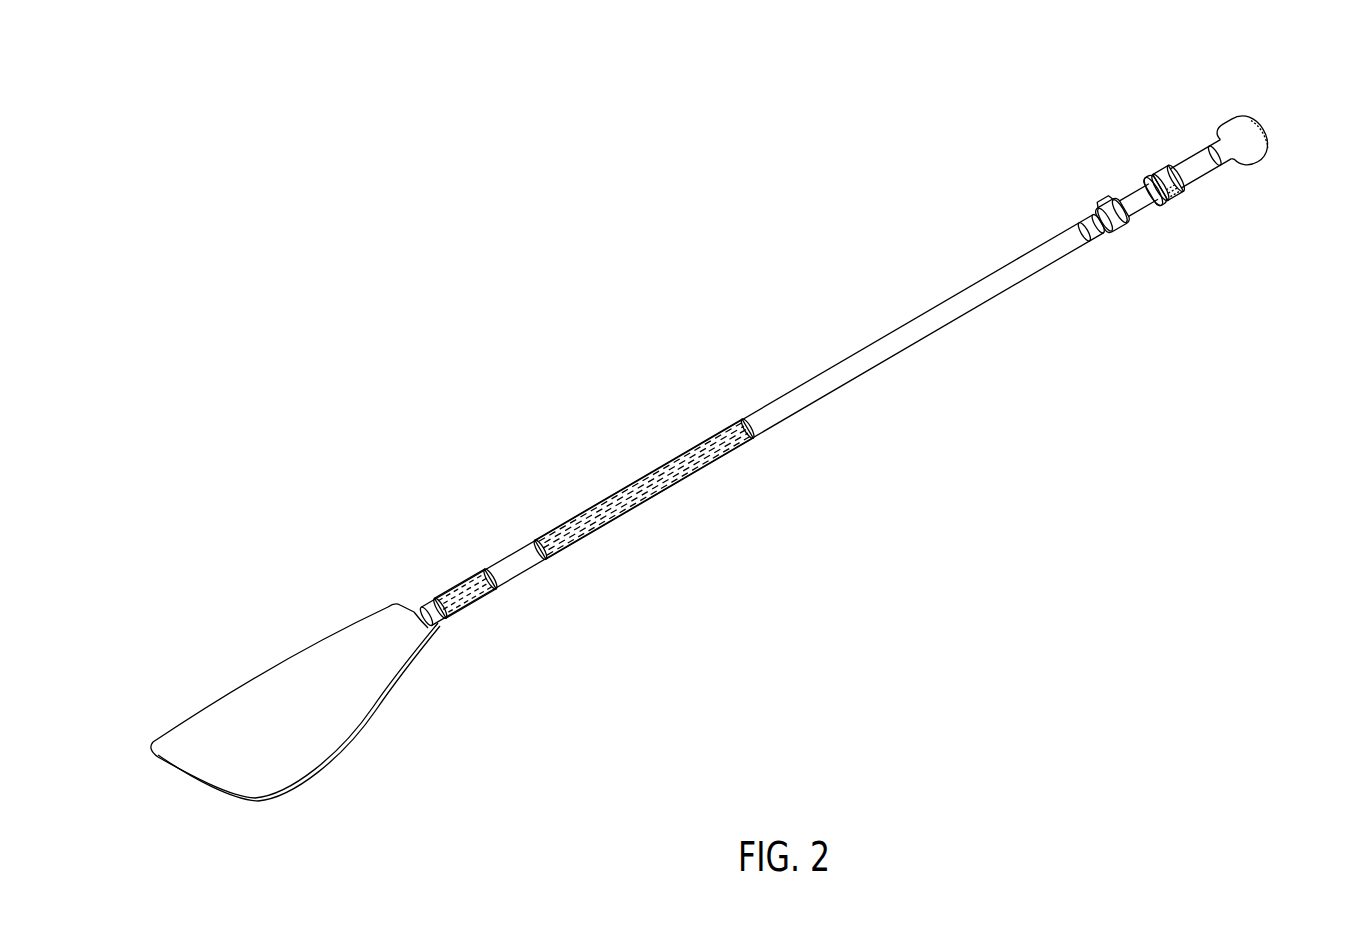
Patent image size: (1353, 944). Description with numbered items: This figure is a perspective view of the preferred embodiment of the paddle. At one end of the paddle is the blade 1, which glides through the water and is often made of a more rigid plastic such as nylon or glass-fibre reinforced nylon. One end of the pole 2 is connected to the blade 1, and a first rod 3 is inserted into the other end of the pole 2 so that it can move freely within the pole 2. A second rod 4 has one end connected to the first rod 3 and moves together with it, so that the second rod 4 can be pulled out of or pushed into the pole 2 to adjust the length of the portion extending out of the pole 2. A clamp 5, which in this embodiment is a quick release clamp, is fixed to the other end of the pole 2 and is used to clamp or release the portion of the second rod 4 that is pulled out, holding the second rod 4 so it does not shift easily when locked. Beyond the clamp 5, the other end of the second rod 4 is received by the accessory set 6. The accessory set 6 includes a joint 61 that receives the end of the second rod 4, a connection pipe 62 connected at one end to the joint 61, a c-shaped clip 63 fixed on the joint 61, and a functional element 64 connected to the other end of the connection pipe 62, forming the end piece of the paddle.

The blade 1 is at (259, 697).
The pole 2 is at (508, 553).
The first rod 3 is at (715, 467).
The second rod 4 is at (878, 358).
The clamp 5 is at (1081, 205).
The accessory set 6 is at (1214, 163).
The joint 61 is at (1177, 168).
The connection pipe 62 is at (1202, 163).
The c-shaped clip 63 is at (1173, 193).
The functional element 64 is at (1253, 130).